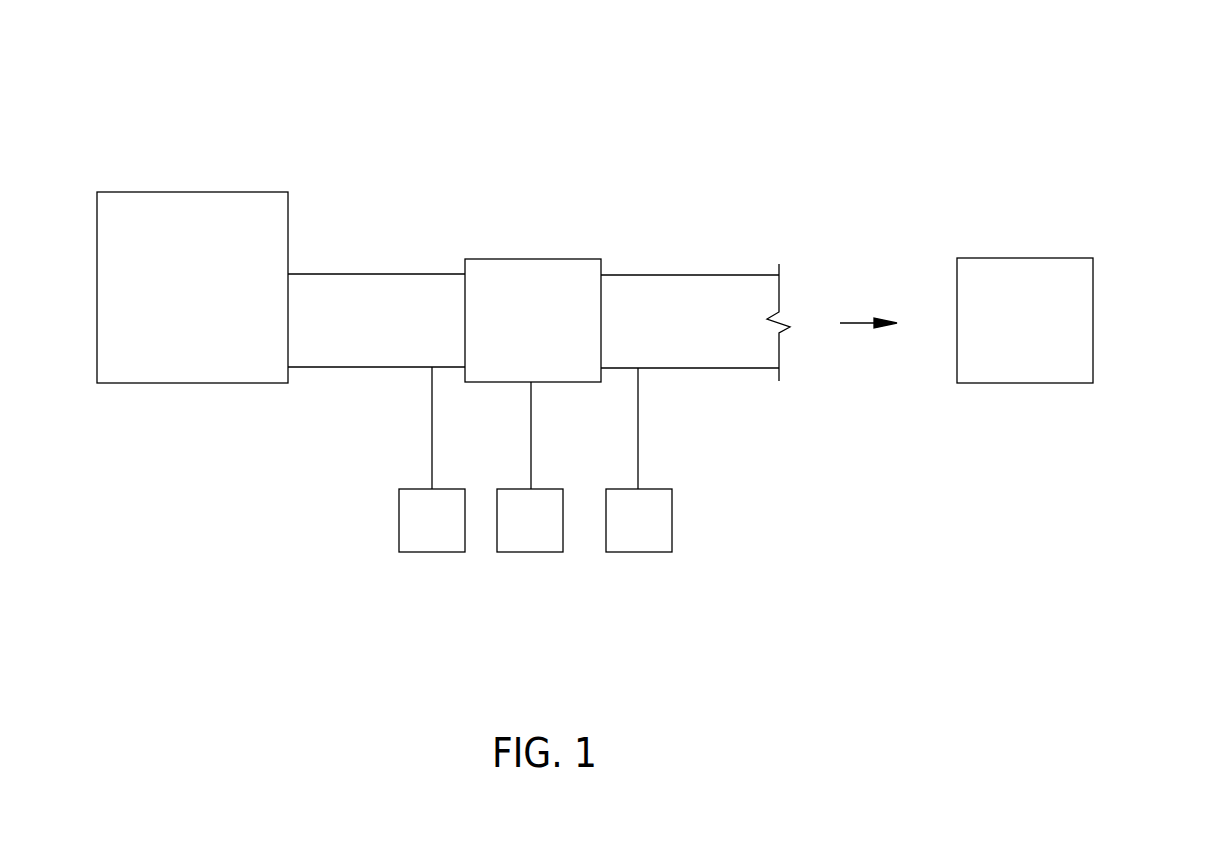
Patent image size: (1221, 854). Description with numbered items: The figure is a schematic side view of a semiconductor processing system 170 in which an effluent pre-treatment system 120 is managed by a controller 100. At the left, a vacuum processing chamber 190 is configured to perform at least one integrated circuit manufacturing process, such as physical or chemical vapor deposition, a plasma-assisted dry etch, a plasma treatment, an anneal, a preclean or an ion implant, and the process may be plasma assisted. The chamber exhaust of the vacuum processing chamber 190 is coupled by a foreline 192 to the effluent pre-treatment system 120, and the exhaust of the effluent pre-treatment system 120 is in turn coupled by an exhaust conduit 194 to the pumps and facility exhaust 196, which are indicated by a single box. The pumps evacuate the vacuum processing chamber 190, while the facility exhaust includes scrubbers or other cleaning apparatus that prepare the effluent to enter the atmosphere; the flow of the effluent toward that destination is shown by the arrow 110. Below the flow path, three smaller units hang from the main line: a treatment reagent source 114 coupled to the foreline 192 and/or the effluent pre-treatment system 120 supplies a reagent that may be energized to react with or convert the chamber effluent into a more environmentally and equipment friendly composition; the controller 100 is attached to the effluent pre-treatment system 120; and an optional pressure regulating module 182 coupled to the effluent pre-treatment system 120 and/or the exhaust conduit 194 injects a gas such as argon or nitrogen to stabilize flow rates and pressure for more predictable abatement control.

The semiconductor processing system 170 is at (1008, 68).
The vacuum processing chamber 190 is at (175, 192).
The foreline 192 is at (380, 274).
The effluent pre-treatment system 120 is at (560, 259).
The exhaust conduit 194 is at (703, 275).
The arrow 110 is at (851, 323).
The pumps and facility exhaust 196 is at (1036, 258).
The treatment reagent source 114 is at (419, 552).
The controller 100 is at (528, 552).
The pressure regulating module 182 is at (643, 552).